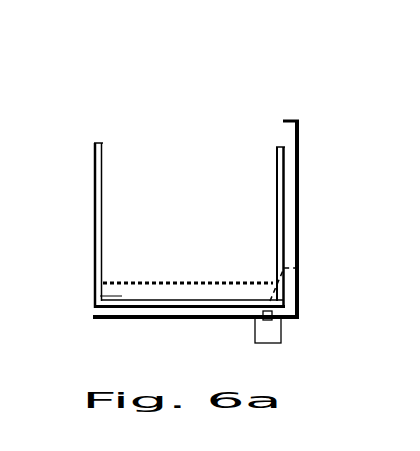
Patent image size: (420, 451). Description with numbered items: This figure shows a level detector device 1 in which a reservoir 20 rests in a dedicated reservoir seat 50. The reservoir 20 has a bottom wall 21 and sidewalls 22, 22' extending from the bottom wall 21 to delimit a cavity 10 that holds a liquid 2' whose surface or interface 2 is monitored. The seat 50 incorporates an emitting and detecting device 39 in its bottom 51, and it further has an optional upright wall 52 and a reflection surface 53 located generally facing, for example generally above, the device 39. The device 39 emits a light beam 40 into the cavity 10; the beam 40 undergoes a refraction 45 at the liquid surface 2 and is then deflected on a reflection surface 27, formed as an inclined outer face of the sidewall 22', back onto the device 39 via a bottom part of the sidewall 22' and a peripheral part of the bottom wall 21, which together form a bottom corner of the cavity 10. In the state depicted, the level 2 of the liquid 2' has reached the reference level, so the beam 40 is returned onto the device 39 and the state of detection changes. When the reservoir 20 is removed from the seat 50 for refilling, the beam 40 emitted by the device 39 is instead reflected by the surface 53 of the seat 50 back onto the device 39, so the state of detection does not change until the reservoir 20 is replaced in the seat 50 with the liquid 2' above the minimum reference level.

The device 1 is at (92, 103).
The liquid surface 2 is at (188, 254).
The liquid 2' is at (68, 287).
The cavity 10 is at (132, 182).
The reservoir 20 is at (156, 194).
The bottom wall 21 is at (197, 299).
The sidewall 22 is at (65, 216).
The sidewall 22' is at (249, 214).
The reflection surface 27 is at (292, 258).
The emitting and detecting device 39 is at (275, 335).
The light beam 40 is at (285, 291).
The refraction 45 is at (268, 282).
The reservoir seat 50 is at (246, 207).
The bottom 51 is at (132, 319).
The upright wall 52 is at (299, 157).
The reflection surface 53 is at (291, 119).